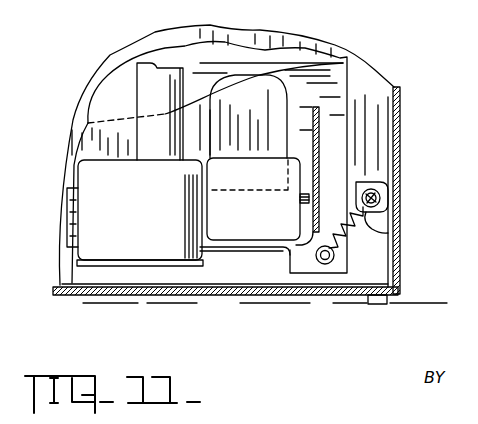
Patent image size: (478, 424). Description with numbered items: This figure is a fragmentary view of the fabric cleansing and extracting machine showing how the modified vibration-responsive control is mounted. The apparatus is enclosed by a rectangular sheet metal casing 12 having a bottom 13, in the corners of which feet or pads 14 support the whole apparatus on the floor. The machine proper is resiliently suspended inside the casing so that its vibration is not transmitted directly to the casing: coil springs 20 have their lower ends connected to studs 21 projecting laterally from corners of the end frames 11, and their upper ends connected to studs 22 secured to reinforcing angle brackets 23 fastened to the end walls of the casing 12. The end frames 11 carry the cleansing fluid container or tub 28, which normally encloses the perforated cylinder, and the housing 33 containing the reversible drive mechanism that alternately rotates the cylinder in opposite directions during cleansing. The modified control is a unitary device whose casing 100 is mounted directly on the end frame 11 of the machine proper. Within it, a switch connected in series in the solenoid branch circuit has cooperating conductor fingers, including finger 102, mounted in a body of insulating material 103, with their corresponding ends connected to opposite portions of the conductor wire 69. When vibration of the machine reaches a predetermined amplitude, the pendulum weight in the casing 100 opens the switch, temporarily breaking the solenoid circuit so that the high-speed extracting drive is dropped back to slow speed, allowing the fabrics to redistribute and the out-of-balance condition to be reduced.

The end frame 11 is at (338, 92).
The casing 12 is at (399, 143).
The bottom 13 is at (208, 290).
The feet or pads 14 is at (378, 304).
The coil springs 20 is at (366, 222).
The studs 21 is at (321, 264).
The studs 22 is at (378, 193).
The reinforcing angle brackets 23 is at (378, 218).
The cleansing fluid container or tub 28 is at (262, 68).
The housing 33 is at (163, 248).
The conductor wire 69 is at (319, 128).
The casing 100 is at (277, 230).
The conductor finger 102 is at (392, 0).
The body of insulating material 103 is at (339, 6).